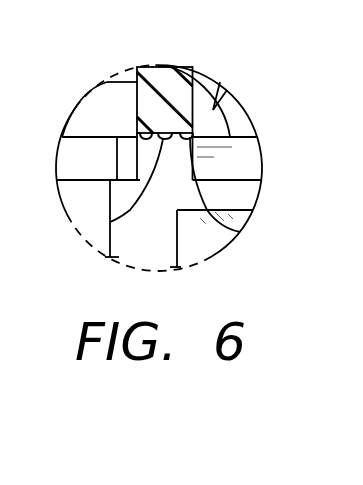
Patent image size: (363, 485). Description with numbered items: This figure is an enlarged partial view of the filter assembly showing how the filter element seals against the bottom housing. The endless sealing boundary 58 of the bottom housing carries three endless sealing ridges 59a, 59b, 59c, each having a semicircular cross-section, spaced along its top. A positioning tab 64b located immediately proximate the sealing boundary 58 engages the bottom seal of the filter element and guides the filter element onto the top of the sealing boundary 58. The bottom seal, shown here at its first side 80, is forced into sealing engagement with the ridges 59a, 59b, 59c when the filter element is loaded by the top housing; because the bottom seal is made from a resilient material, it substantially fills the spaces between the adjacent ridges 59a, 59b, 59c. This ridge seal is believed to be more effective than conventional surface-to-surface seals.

The first side 80 is at (151, 70).
The endless sealing boundary 58 is at (228, 118).
The positioning tab 64b is at (235, 137).
The endless sealing ridge 59a is at (136, 134).
The endless sealing ridge 59b is at (110, 222).
The endless sealing ridge 59c is at (232, 226).